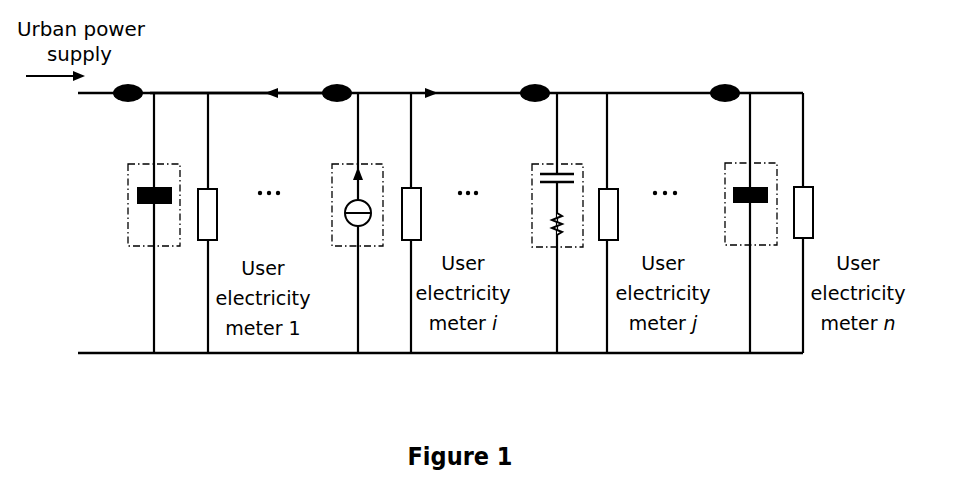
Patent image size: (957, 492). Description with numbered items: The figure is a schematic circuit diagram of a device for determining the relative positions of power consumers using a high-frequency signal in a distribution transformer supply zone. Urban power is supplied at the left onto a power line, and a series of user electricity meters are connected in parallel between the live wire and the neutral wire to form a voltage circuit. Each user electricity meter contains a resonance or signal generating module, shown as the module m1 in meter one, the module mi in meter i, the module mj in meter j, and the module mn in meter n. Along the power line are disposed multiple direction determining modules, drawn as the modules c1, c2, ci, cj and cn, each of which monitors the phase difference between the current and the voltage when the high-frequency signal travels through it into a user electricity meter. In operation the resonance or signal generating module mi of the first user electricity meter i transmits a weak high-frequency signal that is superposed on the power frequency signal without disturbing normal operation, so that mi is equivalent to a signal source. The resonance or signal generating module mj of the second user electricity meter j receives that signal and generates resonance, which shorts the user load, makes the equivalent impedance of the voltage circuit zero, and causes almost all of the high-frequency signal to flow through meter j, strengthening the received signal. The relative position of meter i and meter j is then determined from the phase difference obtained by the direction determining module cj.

The direction determining module c1 is at (129, 81).
The direction determining module c2 is at (240, 77).
The direction determining module ci is at (335, 81).
The direction determining module cj is at (533, 81).
The direction determining module cn is at (727, 81).
The resonance or signal generating module m1 is at (131, 223).
The resonance or signal generating module mi is at (340, 223).
The resonance or signal generating module mj is at (541, 223).
The resonance or signal generating module mn is at (733, 223).